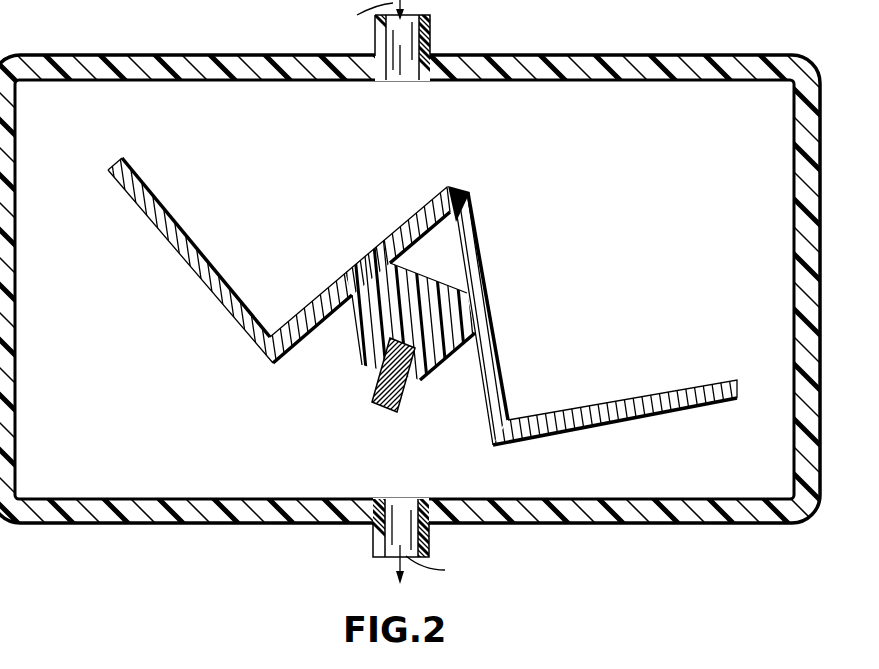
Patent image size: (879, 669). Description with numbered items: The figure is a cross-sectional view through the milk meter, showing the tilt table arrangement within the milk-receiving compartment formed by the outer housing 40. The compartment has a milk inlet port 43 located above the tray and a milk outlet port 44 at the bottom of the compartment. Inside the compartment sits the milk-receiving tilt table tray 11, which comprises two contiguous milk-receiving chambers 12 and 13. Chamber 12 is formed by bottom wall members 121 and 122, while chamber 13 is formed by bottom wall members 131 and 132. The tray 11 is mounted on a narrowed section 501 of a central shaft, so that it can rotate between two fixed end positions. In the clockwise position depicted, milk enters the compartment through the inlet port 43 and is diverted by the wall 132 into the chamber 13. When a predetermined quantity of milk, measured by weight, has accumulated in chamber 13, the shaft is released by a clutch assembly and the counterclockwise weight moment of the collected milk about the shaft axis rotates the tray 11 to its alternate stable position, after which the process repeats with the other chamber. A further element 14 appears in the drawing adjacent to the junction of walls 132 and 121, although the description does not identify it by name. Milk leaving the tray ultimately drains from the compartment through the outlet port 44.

The outer housing 40 is at (439, 300).
The milk inlet port 43 is at (402, 50).
The milk outlet port 44 is at (428, 532).
The milk-receiving chamber 13 is at (275, 265).
The bottom wall member 131 is at (190, 260).
The bottom wall member 132 is at (360, 275).
The hatched deflector member 14 is at (432, 279).
The narrowed section of central shaft 501 is at (392, 384).
The milk-receiving tilt table tray 11 is at (594, 324).
The milk-receiving chamber 12 is at (594, 324).
The bottom wall member 121 is at (501, 317).
The bottom wall member 122 is at (615, 421).